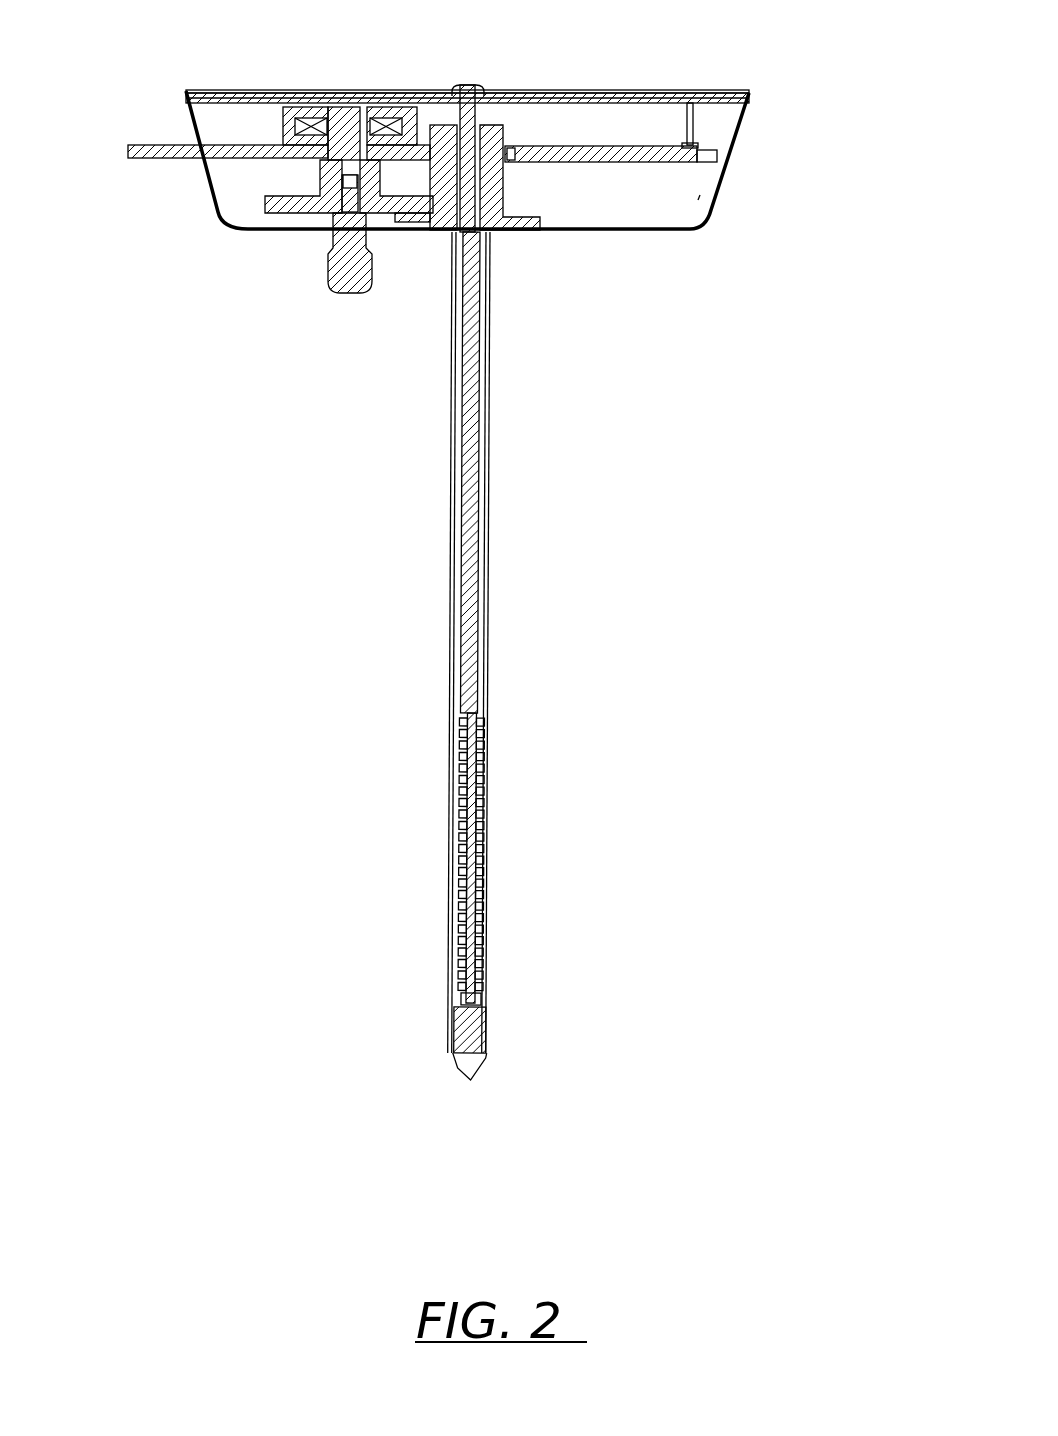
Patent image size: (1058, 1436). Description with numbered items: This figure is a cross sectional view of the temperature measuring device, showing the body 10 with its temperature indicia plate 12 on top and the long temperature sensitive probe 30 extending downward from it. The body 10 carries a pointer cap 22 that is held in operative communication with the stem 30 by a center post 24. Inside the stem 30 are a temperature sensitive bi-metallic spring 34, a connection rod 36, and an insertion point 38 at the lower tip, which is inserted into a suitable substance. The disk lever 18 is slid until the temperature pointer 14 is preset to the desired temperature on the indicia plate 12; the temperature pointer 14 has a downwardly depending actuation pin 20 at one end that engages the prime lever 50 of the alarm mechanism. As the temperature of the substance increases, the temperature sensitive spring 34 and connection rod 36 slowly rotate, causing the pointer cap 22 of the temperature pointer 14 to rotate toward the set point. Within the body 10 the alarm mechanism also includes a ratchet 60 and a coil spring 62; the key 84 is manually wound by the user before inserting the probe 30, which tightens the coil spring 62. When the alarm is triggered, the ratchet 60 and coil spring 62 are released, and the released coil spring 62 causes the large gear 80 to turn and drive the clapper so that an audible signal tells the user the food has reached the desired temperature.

The body 10 is at (722, 185).
The temperature indicia plate 12 is at (750, 97).
The temperature pointer 14 is at (630, 92).
The disk lever 18 is at (160, 143).
The actuation pin 20 is at (695, 125).
The pointer cap 22 is at (463, 88).
The center post 24 is at (500, 233).
The temperature sensitive probe 30 is at (492, 645).
The temperature sensitive bi-metallic spring 34 is at (492, 905).
The connection rod 36 is at (470, 860).
The insertion point 38 is at (472, 1055).
The prime lever 50 is at (566, 145).
The ratchet 60 is at (291, 115).
The coil spring 62 is at (400, 115).
The large gear 80 is at (285, 205).
The key 84 is at (345, 292).